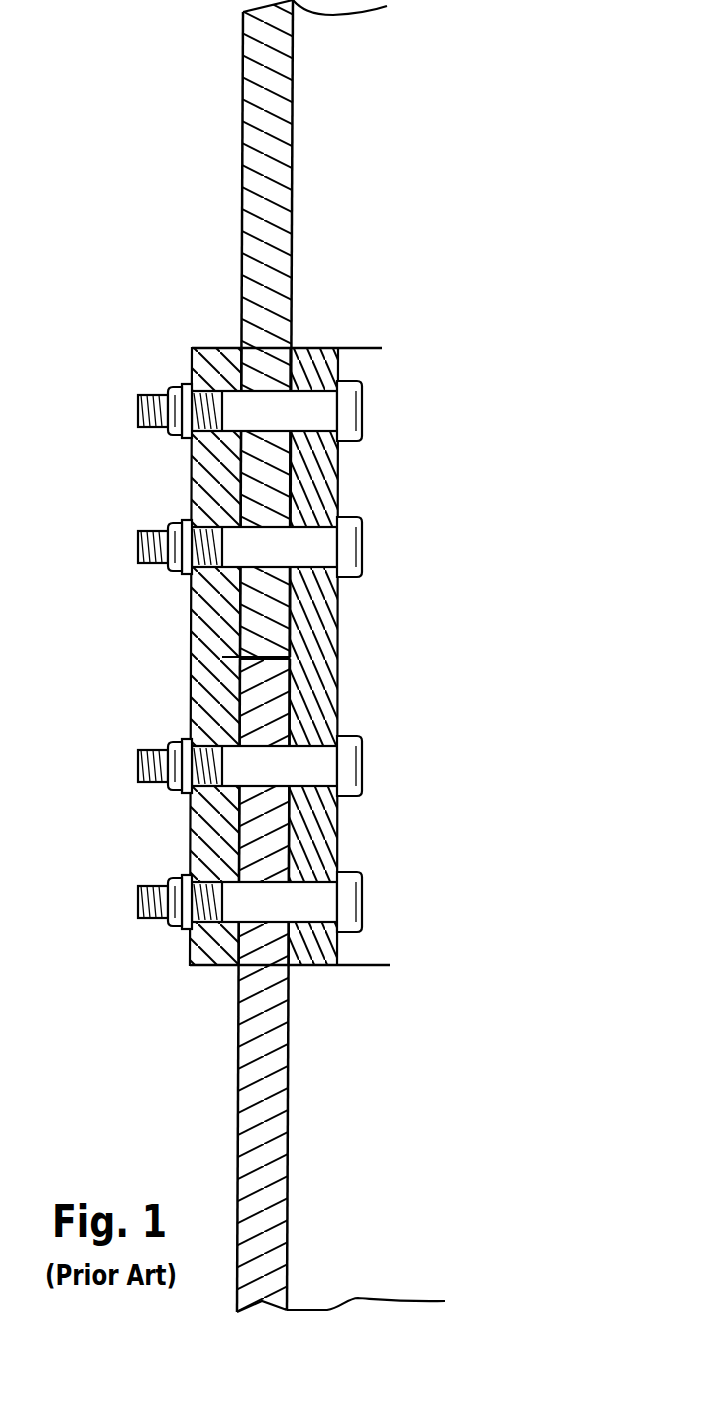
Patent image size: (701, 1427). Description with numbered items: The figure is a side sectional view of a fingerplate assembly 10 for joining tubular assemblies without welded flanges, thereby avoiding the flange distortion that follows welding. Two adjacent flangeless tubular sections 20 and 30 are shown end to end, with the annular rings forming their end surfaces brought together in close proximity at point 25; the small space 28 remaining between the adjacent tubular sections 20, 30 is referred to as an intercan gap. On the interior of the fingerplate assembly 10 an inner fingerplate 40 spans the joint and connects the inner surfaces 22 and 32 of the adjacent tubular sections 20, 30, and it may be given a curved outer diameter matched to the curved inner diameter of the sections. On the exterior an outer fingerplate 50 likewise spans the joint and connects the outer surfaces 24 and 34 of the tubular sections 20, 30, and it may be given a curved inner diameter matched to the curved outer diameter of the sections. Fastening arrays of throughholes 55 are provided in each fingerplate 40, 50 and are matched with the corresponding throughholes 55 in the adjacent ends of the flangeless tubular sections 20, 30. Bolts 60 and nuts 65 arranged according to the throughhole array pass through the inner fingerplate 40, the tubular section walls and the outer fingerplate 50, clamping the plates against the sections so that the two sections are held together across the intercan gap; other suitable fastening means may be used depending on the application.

The fingerplate assembly 10 is at (560, 547).
The flangeless tubular section 20 is at (274, 328).
The inner surface 22 is at (292, 272).
The outer surface 24 is at (242, 134).
The point 25 is at (258, 657).
The space 28 is at (238, 657).
The flangeless tubular section 30 is at (311, 985).
The inner surface 32 is at (288, 1076).
The outer surface 34 is at (238, 1036).
The inner fingerplate 40 is at (316, 350).
The outer fingerplate 50 is at (220, 350).
The throughholes 55 is at (275, 392).
The bolts 60 is at (348, 417).
The nuts 65 is at (172, 419).